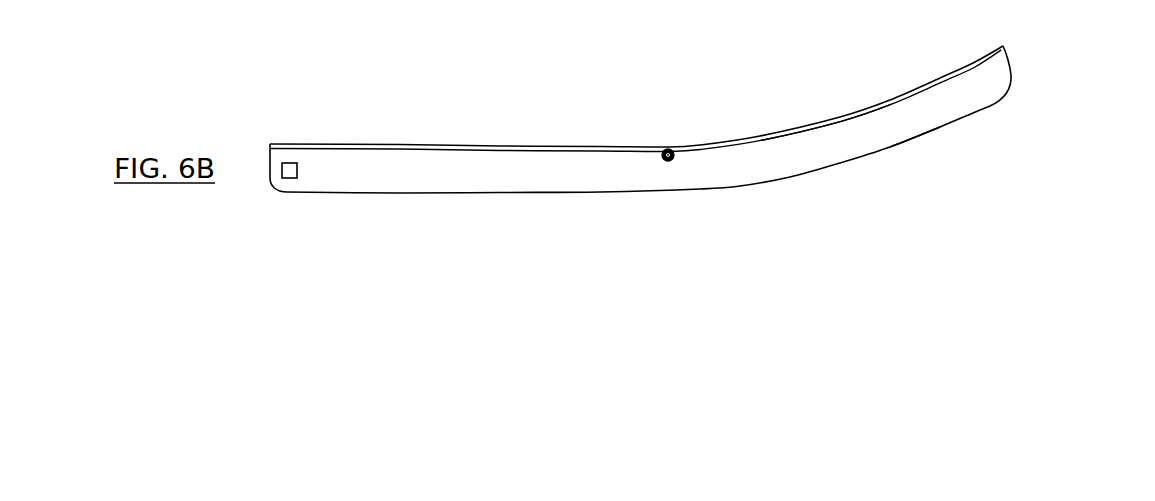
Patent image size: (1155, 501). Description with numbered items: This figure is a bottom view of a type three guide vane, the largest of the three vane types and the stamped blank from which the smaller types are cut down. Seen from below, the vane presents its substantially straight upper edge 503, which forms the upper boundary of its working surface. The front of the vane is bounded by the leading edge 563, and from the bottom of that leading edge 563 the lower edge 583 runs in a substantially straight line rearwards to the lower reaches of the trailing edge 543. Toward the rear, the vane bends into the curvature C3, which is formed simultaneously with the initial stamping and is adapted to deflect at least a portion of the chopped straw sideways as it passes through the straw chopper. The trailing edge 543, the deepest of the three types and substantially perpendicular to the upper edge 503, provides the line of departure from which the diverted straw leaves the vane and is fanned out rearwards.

The upper edge 503 is at (470, 179).
The leading edge 563 is at (354, 146).
The lower edge 583 is at (761, 134).
The curvature C3 is at (820, 120).
The trailing edge 543 is at (1012, 83).